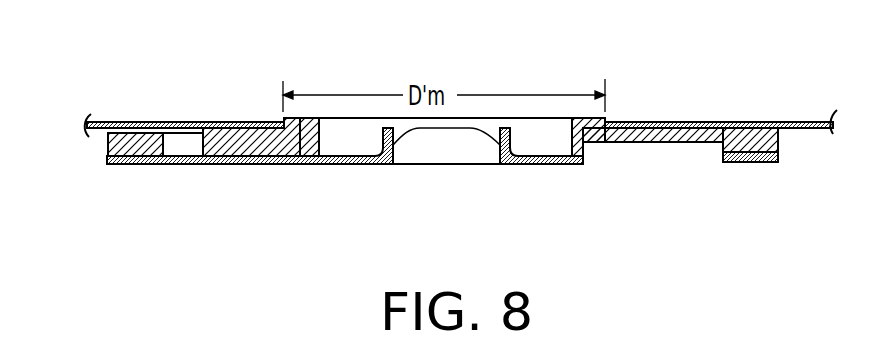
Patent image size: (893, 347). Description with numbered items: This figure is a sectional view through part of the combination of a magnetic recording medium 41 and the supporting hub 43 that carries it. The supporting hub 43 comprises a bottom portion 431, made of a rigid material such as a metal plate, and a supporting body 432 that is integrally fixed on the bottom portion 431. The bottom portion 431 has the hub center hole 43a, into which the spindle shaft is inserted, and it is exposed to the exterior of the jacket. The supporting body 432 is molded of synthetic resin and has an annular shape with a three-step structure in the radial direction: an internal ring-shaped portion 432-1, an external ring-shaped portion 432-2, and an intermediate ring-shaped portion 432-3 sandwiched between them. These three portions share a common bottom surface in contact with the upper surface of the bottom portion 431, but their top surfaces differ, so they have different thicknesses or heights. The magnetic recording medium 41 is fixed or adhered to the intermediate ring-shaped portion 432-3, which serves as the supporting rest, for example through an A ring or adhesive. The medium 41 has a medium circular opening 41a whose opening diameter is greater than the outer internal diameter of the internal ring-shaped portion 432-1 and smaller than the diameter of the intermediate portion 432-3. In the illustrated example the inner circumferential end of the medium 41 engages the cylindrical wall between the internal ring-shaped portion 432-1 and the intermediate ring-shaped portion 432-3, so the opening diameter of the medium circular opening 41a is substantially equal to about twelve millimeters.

The magnetic recording medium 41 is at (778, 121).
The medium circular opening 41a is at (593, 117).
The supporting hub 43 is at (245, 170).
The hub center hole 43a is at (503, 152).
The bottom portion 431 is at (577, 166).
The supporting body 432 is at (318, 116).
The internal ring-shaped portion 432-1 is at (578, 116).
The external ring-shaped portion 432-2 is at (133, 132).
The intermediate ring-shaped portion 432-3 is at (248, 143).